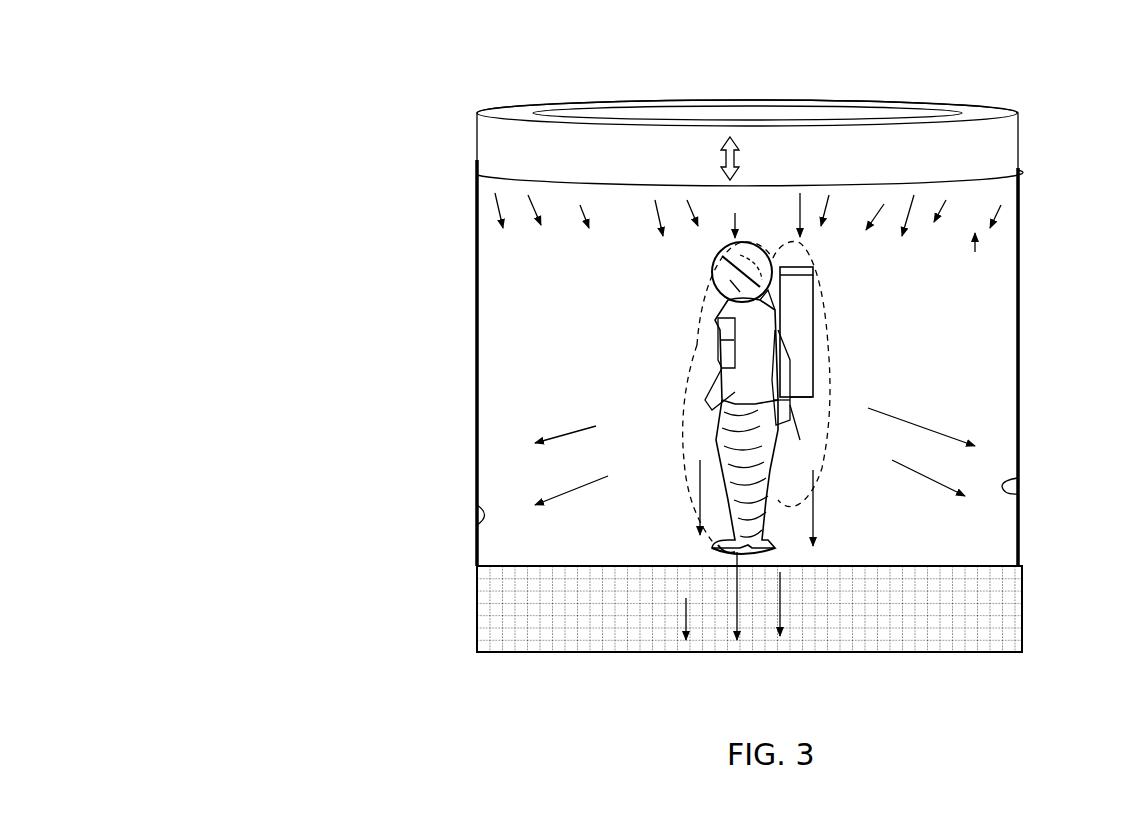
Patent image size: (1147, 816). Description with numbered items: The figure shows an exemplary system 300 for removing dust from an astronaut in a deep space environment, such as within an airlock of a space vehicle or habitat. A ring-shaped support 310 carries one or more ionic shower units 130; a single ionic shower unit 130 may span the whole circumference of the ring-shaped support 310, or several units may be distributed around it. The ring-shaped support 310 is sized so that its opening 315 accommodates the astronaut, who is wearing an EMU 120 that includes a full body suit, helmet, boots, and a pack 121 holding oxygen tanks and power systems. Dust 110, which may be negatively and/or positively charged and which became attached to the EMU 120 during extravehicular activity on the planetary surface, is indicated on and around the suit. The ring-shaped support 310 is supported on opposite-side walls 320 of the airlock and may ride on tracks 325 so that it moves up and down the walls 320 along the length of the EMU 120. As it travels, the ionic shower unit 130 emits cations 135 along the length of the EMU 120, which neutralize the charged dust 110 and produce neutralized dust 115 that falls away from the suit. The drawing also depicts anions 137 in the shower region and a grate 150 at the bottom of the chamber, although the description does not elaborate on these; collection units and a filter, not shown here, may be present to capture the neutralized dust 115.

The system 300 is at (270, 77).
The ring-shaped support 310 is at (1018, 140).
The opening 315 is at (640, 112).
The ionic shower unit 130 is at (512, 110).
The walls 320 is at (477, 448).
The tracks 325 is at (477, 509).
The cations 135 is at (557, 229).
The anions 137 is at (761, 238).
The dust 110 is at (678, 394).
The neutralized dust 115 is at (766, 494).
The EMU 120 is at (768, 434).
The pack 121 is at (812, 436).
The grate 150 is at (492, 632).